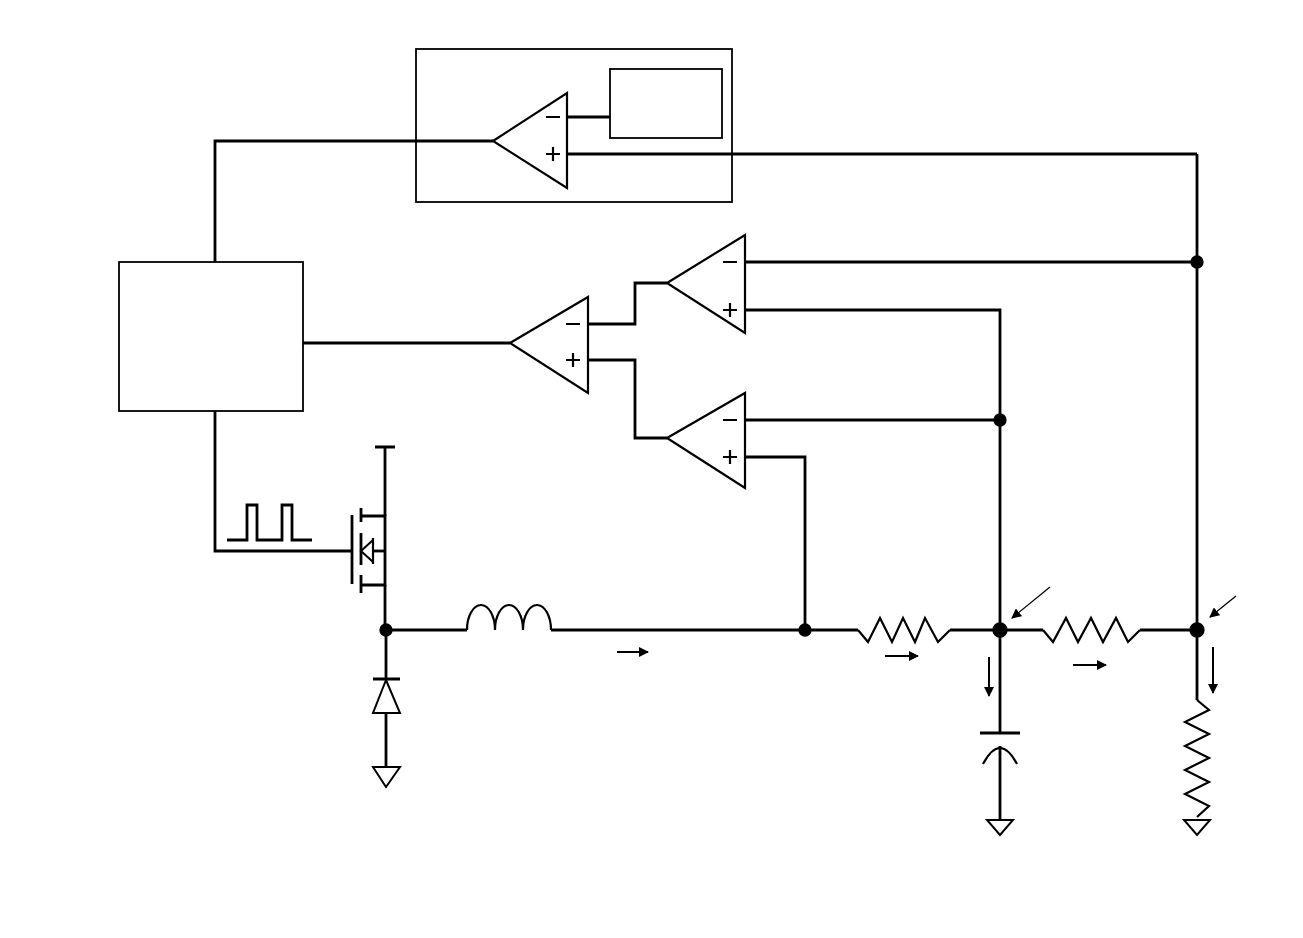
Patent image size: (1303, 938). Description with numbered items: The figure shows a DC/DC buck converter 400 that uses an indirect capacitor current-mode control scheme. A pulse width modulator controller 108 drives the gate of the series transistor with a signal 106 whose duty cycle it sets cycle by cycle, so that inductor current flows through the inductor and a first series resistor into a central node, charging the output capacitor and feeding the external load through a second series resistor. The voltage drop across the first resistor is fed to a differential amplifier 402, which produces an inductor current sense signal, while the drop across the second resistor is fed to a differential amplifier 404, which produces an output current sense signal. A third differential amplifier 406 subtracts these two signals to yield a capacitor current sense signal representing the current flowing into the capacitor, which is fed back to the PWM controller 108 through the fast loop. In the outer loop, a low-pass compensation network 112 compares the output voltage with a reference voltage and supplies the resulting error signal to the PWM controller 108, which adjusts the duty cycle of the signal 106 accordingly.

The DC/DC buck converter 400 is at (702, 442).
The low-pass compensation network 112 is at (416, 75).
The pulse width modulator controller 108 is at (152, 412).
The signal 106 is at (250, 500).
The differential amplifier 402 is at (702, 465).
The differential amplifier 404 is at (692, 305).
The differential amplifier 406 is at (520, 355).